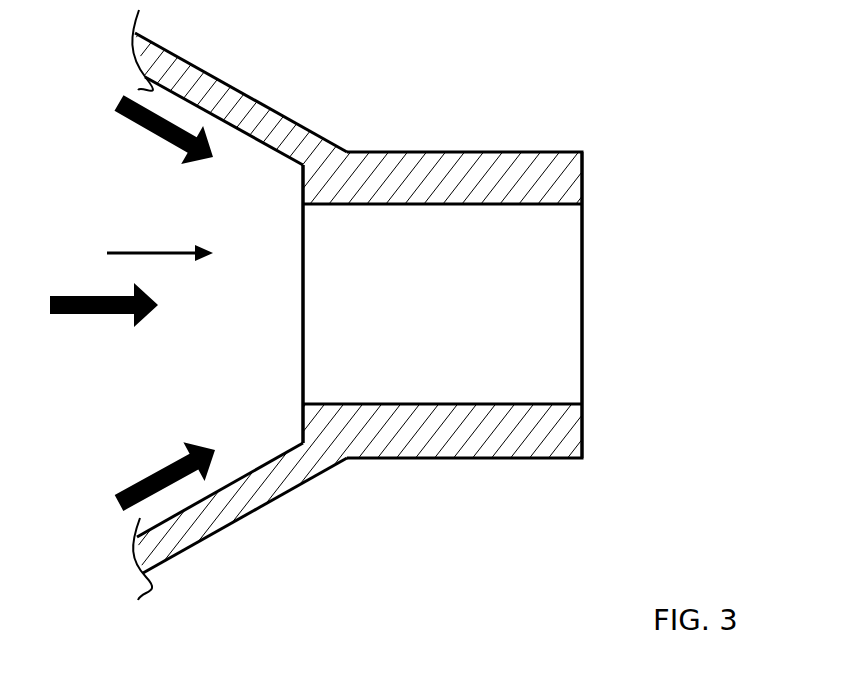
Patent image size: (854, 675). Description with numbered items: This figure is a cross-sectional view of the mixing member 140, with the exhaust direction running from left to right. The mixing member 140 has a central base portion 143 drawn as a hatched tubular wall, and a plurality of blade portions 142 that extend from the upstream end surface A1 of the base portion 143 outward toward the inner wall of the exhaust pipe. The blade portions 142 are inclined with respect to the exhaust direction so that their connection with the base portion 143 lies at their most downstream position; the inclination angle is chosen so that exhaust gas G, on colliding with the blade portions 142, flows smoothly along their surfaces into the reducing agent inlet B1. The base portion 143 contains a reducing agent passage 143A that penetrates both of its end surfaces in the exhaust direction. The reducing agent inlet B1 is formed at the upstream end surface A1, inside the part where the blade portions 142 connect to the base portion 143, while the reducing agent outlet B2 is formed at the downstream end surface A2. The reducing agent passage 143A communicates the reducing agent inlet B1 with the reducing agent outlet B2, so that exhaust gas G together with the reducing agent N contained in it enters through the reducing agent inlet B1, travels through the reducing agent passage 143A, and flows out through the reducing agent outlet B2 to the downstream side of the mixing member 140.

The mixing member 140 is at (523, 70).
The blade portions 142 is at (253, 112).
The base portion 143 is at (428, 163).
The reducing agent passage 143A is at (460, 315).
The upstream end surface A1 is at (302, 187).
The downstream end surface A2 is at (582, 172).
The reducing agent inlet B1 is at (303, 313).
The reducing agent outlet B2 is at (582, 285).
The exhaust gas G is at (130, 123).
The reducing agent N is at (157, 250).